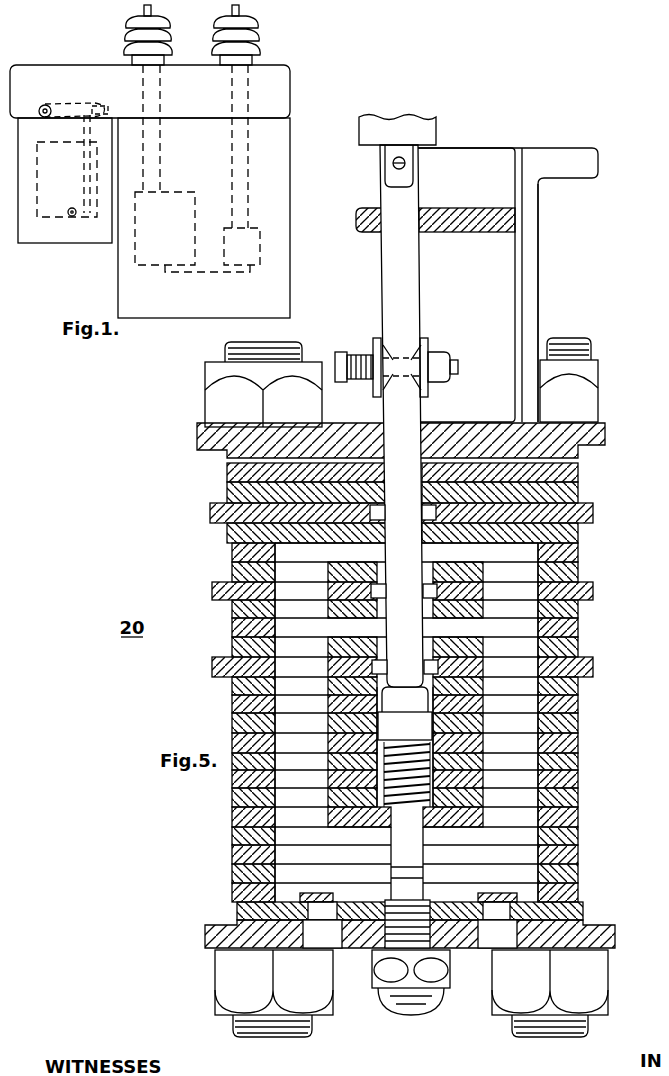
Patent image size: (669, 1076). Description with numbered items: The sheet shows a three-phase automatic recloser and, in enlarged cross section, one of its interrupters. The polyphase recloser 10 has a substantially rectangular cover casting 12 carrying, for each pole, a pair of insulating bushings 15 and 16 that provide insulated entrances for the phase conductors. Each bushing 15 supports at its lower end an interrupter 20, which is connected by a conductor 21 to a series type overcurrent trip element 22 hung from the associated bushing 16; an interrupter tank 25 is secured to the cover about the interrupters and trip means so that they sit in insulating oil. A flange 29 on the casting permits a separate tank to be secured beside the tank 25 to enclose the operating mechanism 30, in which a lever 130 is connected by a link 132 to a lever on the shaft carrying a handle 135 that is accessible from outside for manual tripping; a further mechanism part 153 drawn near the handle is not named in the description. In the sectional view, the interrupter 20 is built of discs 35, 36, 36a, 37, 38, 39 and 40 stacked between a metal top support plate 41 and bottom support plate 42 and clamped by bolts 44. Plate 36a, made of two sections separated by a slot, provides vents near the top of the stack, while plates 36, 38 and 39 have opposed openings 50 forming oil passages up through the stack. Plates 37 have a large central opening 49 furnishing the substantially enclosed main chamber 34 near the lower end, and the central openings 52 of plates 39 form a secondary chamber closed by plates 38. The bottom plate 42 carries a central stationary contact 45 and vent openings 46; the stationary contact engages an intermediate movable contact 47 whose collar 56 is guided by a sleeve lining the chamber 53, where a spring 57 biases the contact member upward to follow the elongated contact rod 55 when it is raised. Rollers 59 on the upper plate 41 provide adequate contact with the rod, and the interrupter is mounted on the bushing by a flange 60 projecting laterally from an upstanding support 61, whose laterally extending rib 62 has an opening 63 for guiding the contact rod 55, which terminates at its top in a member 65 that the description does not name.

In FIG. 1, the polyphase recloser 10 is at (320, 109).
In FIG. 1, the cover casting 12 is at (290, 74).
In FIG. 1, the insulating bushing 15 is at (133, 42).
In FIG. 1, the insulating bushing 16 is at (250, 42).
In FIG. 1, the interrupter 20 is at (187, 192).
In FIG. 1, the conductor 21 is at (216, 273).
In FIG. 1, the series type overcurrent trip element 22 is at (224, 234).
In FIG. 1, the interrupter tank 25 is at (290, 183).
In FIG. 1, the flange 29 is at (68, 243).
In FIG. 1, the operating mechanism 30 is at (47, 172).
In FIG. 1, the lever 130 is at (71, 217).
In FIG. 1, the link 132 is at (84, 186).
In FIG. 1, the handle 135 is at (72, 102).
In FIG. 1, the lever 153 is at (110, 107).
In FIG. 5, the main chamber 34 is at (487, 862).
In FIG. 5, the plate 35 is at (578, 474).
In FIG. 5, the plate 36 is at (212, 591).
In FIG. 5, the plate 36a is at (210, 513).
In FIG. 5, the plate 37 is at (578, 552).
In FIG. 5, the insulating plate 38 is at (232, 572).
In FIG. 5, the plate 39 is at (578, 704).
In FIG. 5, the disc 40 is at (583, 910).
In FIG. 5, the top support plate 41 is at (605, 438).
In FIG. 5, the bottom support plate 42 is at (615, 936).
In FIG. 5, the bolt 44 is at (225, 347).
In FIG. 5, the stationary contact 45 is at (423, 886).
In FIG. 5, the vent opening 46 is at (335, 948).
In FIG. 5, the intermediate movable contact 47 is at (423, 858).
In FIG. 5, the central opening 49 is at (538, 626).
In FIG. 5, the opening 50 is at (275, 778).
In FIG. 5, the central opening 52 is at (345, 690).
In FIG. 5, the chamber 53 is at (386, 700).
In FIG. 5, the contact rod 55 is at (421, 285).
In FIG. 5, the collar 56 is at (470, 718).
In FIG. 5, the spring 57 is at (472, 797).
In FIG. 5, the roller 59 is at (375, 338).
In FIG. 5, the flange 60 is at (598, 163).
In FIG. 5, the upstanding support 61 is at (538, 300).
In FIG. 5, the rib 62 is at (356, 228).
In FIG. 5, the opening 63 is at (424, 210).
In FIG. 5, the operating member 65 is at (436, 130).